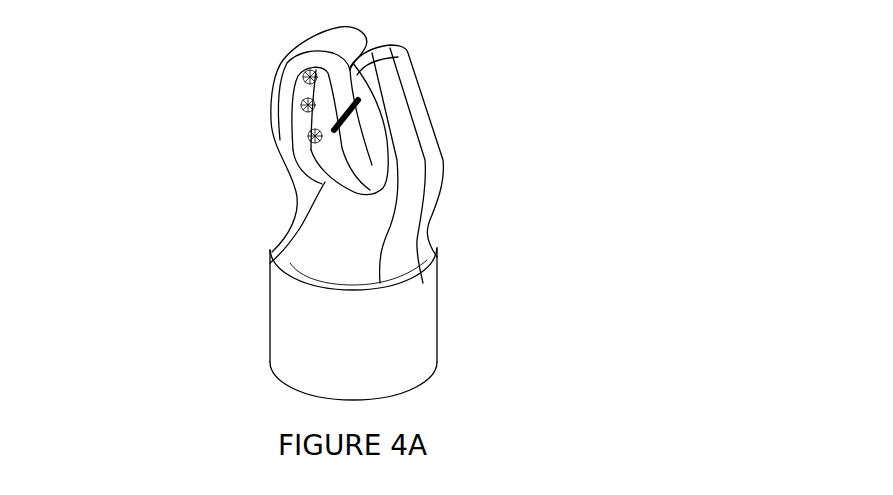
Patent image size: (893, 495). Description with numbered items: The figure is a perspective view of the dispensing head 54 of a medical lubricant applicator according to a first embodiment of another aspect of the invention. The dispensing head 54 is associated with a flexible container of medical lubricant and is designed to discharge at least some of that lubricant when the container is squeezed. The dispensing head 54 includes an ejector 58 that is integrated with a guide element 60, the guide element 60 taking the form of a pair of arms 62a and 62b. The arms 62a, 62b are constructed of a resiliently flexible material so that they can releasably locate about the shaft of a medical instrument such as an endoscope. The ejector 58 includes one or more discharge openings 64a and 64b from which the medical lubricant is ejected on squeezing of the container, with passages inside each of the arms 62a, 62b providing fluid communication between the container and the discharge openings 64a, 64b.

The dispensing head 54 is at (513, 193).
The ejector 58 is at (360, 98).
The guide element 60 is at (293, 203).
The arm 62a is at (277, 127).
The arm 62b is at (413, 143).
The discharge opening 64a is at (287, 162).
The discharge opening 64b is at (290, 234).